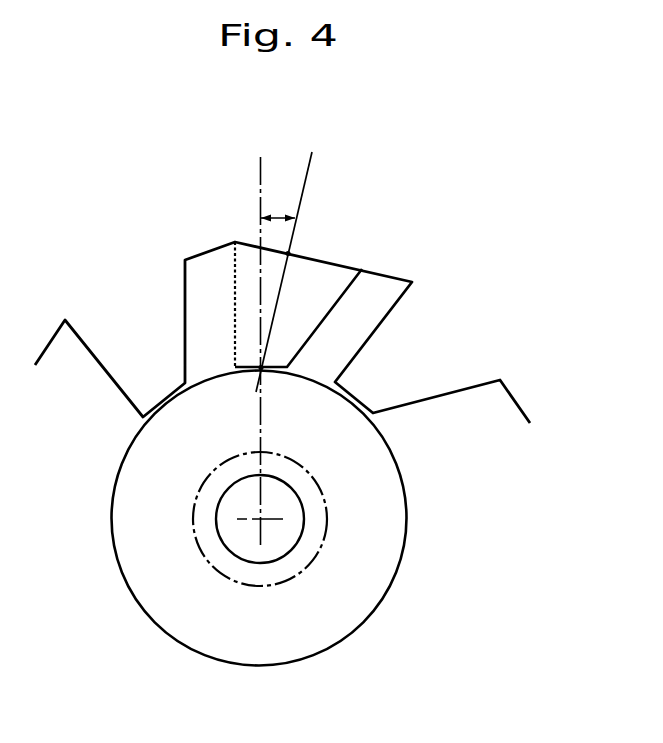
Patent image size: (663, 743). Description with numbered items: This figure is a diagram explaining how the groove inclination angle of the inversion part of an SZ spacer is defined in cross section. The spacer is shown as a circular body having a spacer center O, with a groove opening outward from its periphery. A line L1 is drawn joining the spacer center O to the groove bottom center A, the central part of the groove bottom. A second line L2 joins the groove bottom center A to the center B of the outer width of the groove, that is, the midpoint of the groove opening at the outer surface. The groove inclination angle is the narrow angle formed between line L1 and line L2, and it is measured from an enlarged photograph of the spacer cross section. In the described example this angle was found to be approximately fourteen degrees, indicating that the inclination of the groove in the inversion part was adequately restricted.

The line L1 is at (259, 337).
The line L2 is at (288, 261).
The groove bottom center A is at (263, 366).
The center of the outer width of the groove B is at (289, 253).
The spacer center O is at (259, 518).